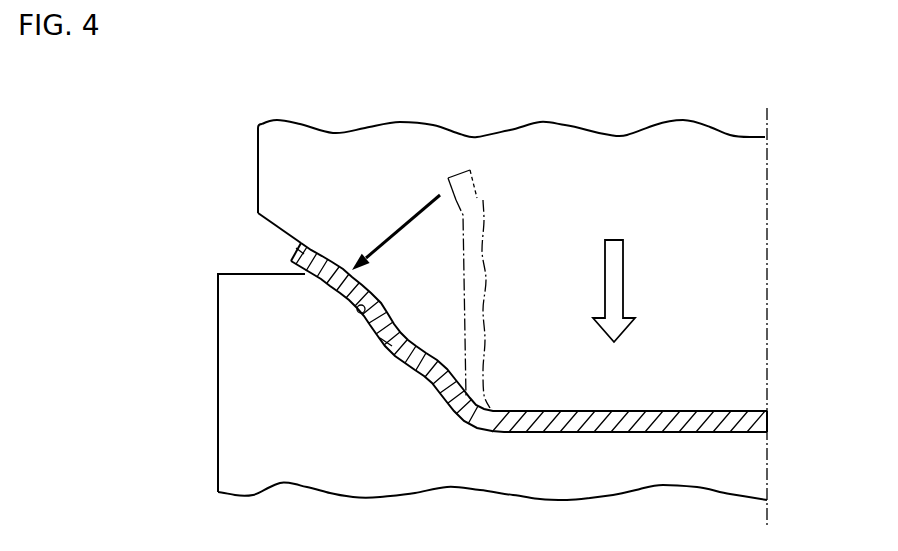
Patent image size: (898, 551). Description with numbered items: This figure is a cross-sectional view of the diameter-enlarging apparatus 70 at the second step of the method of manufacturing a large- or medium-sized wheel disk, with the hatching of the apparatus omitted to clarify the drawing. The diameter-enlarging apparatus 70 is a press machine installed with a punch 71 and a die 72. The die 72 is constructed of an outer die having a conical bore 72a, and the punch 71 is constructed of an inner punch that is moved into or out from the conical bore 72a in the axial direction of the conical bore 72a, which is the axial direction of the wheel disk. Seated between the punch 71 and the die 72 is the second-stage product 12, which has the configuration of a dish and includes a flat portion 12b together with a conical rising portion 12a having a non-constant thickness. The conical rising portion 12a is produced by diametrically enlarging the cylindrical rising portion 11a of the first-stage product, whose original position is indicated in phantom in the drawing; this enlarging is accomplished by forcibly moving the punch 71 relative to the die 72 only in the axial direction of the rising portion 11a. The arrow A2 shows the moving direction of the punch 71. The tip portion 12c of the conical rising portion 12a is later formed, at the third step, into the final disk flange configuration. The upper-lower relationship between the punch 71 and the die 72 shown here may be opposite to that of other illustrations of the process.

The cylindrical rising portion 11a is at (474, 200).
The second-stage product 12 is at (529, 394).
The conical rising portion 12a is at (386, 341).
The flat portion 12b is at (657, 425).
The tip portion 12c is at (306, 273).
The diameter-enlarging apparatus 70 is at (687, 108).
The punch 71 is at (587, 163).
The die 72 is at (277, 468).
The conical bore 72a is at (357, 313).
The moving direction of the punch A2 is at (615, 277).